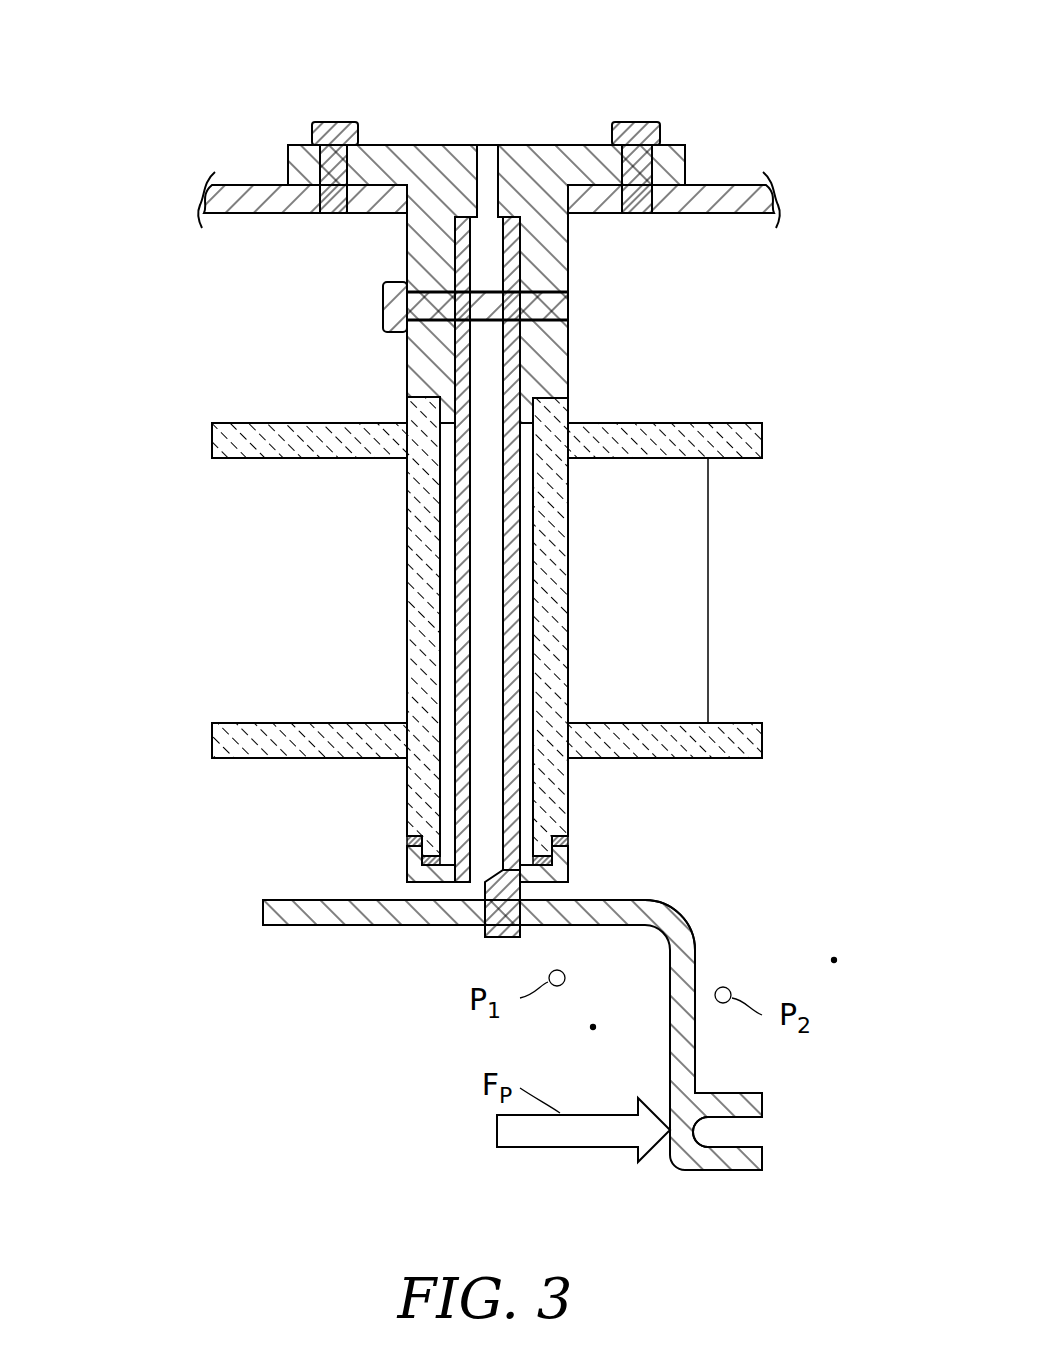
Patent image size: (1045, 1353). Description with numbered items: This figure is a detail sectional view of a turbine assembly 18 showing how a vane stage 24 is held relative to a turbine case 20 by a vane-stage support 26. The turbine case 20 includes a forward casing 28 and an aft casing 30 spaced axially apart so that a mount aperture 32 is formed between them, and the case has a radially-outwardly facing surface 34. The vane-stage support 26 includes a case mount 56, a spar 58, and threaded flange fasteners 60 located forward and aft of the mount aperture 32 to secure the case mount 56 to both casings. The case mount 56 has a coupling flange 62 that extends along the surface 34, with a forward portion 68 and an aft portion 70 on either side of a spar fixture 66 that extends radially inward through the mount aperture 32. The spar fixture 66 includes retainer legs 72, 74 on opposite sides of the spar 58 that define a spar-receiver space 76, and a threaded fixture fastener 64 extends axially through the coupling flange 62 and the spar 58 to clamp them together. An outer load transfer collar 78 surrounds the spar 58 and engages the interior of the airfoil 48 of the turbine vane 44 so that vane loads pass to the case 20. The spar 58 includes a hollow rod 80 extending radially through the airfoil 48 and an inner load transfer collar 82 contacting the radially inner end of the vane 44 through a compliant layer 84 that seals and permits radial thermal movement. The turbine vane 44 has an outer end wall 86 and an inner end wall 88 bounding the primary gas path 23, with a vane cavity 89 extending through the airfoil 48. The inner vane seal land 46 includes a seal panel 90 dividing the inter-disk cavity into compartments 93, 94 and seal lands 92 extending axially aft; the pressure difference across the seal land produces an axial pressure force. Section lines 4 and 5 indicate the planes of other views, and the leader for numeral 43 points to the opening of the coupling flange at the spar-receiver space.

The turbine assembly 18 is at (142, 92).
The turbine case 20 is at (232, 160).
The primary gas path 23 is at (200, 608).
The vane stage 24 is at (300, 1050).
The vane-stage support 26 is at (236, 344).
The forward casing 28 is at (264, 180).
The aft casing 30 is at (750, 185).
The mount aperture 32 is at (400, 218).
The radially-outwardly facing surface 34 is at (214, 190).
The bore opening 43 is at (497, 168).
The turbine vane 44 is at (770, 571).
The inner vane seal land 46 is at (722, 906).
The airfoil 48 is at (568, 482).
The case mount 56 is at (780, 263).
The spar 58 is at (445, 410).
The threaded flange fasteners 60 is at (333, 122).
The coupling flange 62 is at (509, 135).
The threaded fixture fastener 64 is at (387, 300).
The spar fixture 66 is at (628, 353).
The forward portion 68 is at (385, 145).
The aft portion 70 is at (575, 145).
The retainer leg 72 is at (407, 348).
The retainer leg 74 is at (568, 250).
The spar-receiver space 76 is at (462, 215).
The outer load transfer collar 78 is at (540, 412).
The rod 80 is at (445, 488).
The inner load transfer collar 82 is at (405, 862).
The compliant layer 84 is at (568, 842).
The outer end wall 86 is at (762, 442).
The inner end wall 88 is at (762, 744).
The vane cavity 89 is at (447, 628).
The seal panel 90 is at (640, 898).
The seal lands 92 is at (787, 1133).
The compartment 93 is at (592, 1028).
The compartment 94 is at (835, 960).
The section line 4 is at (312, 330).
The section line 5 is at (245, 165).